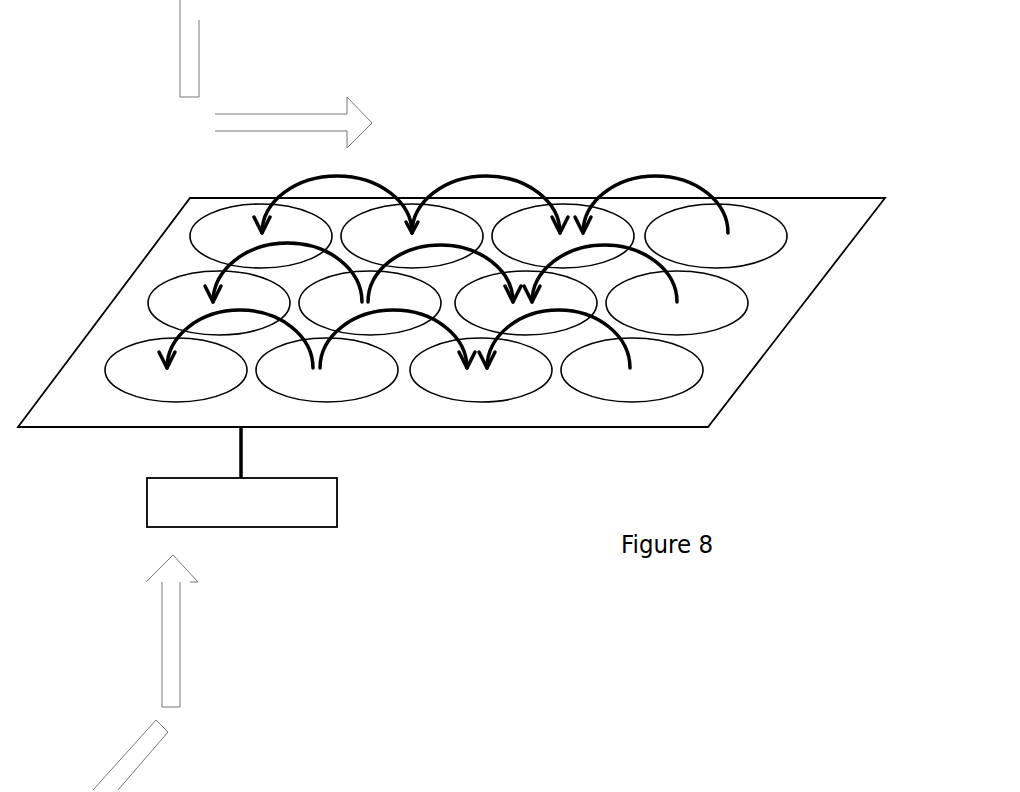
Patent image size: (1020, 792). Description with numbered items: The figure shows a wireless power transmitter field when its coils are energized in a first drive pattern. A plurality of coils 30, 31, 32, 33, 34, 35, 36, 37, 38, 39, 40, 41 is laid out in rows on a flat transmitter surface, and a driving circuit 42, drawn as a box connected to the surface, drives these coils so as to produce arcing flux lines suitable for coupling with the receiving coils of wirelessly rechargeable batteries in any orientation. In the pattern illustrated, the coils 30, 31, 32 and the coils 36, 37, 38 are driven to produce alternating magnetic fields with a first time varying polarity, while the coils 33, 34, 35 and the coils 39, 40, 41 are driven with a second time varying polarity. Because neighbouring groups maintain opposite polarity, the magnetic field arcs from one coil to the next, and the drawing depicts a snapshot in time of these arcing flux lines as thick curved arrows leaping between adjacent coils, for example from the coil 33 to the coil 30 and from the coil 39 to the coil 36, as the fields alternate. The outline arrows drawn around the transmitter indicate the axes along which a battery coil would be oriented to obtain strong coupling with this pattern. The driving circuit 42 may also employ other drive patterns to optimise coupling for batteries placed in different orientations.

The coil 30 is at (261, 236).
The coil 31 is at (219, 303).
The coil 32 is at (176, 370).
The coil 33 is at (412, 236).
The coil 34 is at (370, 303).
The coil 35 is at (327, 370).
The coil 36 is at (563, 236).
The coil 37 is at (526, 303).
The coil 38 is at (481, 370).
The coil 39 is at (716, 236).
The coil 40 is at (677, 303).
The coil 41 is at (632, 370).
The driving circuit 42 is at (242, 477).